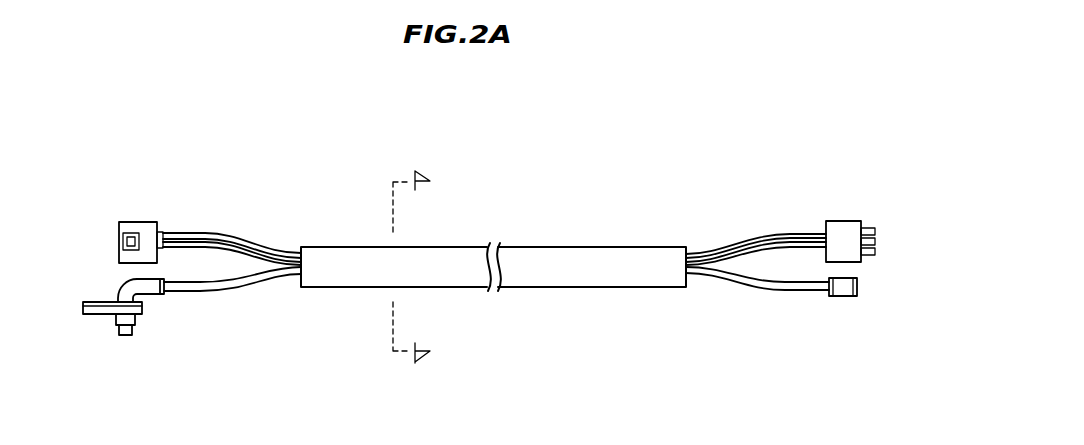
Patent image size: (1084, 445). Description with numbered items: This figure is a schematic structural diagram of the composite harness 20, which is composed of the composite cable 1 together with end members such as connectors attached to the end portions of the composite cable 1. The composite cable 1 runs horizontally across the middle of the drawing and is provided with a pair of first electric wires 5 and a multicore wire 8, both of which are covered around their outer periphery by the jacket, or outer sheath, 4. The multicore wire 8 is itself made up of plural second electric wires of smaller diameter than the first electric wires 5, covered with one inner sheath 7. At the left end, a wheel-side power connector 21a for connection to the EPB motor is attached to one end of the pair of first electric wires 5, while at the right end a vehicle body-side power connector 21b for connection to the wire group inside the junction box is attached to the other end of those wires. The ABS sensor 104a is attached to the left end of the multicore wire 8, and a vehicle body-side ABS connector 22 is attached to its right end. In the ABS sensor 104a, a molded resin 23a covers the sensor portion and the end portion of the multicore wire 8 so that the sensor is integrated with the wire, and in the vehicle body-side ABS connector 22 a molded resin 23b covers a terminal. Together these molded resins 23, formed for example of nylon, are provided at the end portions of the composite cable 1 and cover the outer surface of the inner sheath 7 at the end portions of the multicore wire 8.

The composite harness 20 is at (498, 171).
The composite cable 1 is at (519, 234).
The jacket (outer sheath) 4 is at (613, 280).
The first electric wire 5 is at (199, 247).
The inner sheath 7 is at (198, 292).
The multicore wire 8 is at (236, 285).
The wheel-side power connector 21a is at (119, 247).
The vehicle body-side power connector 21b is at (876, 250).
The vehicle body-side ABS connector 22 is at (858, 287).
The molded resin 23 is at (134, 344).
The molded resin 23a is at (150, 291).
The molded resin 23b is at (841, 289).
The ABS sensor 104a is at (118, 287).